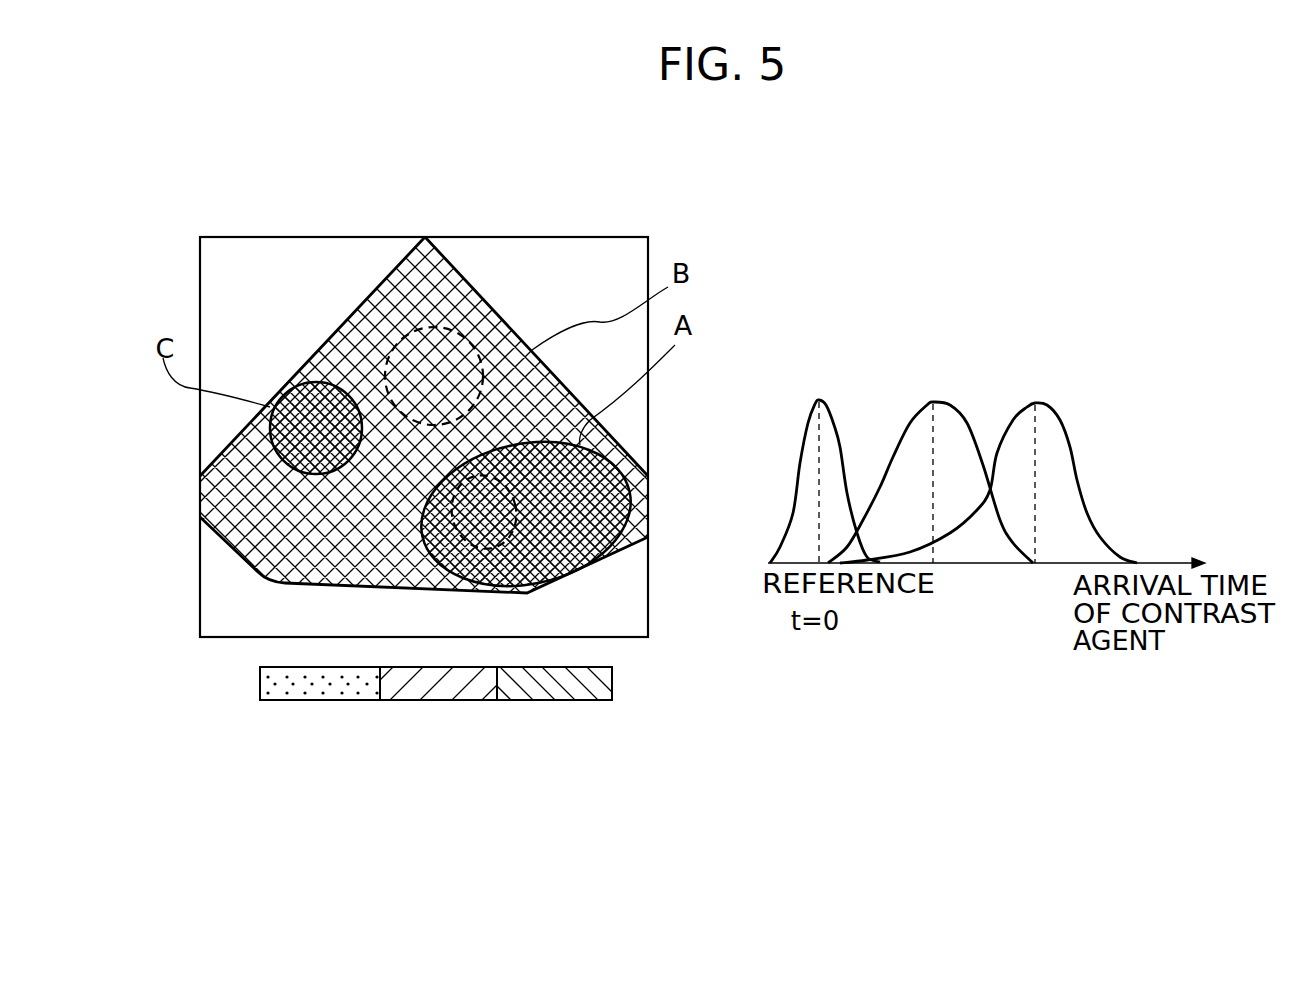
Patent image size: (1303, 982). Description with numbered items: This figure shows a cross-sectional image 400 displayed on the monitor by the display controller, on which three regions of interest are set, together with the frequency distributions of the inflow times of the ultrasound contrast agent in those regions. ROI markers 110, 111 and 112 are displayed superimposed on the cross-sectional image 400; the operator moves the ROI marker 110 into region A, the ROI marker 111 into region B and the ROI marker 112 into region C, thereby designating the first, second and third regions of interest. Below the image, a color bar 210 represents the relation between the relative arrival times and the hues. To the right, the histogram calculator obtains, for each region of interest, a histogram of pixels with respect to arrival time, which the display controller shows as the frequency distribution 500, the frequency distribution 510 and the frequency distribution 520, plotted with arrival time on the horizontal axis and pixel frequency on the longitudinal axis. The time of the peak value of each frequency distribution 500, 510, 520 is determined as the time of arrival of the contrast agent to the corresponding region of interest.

The cross-sectional image 400 is at (492, 270).
The ROI marker 110 is at (513, 512).
The ROI marker 111 is at (400, 338).
The ROI marker 112 is at (297, 367).
The color bar 210 is at (300, 722).
The frequency distribution 500 is at (828, 395).
The frequency distribution 510 is at (958, 395).
The frequency distribution 520 is at (1057, 395).